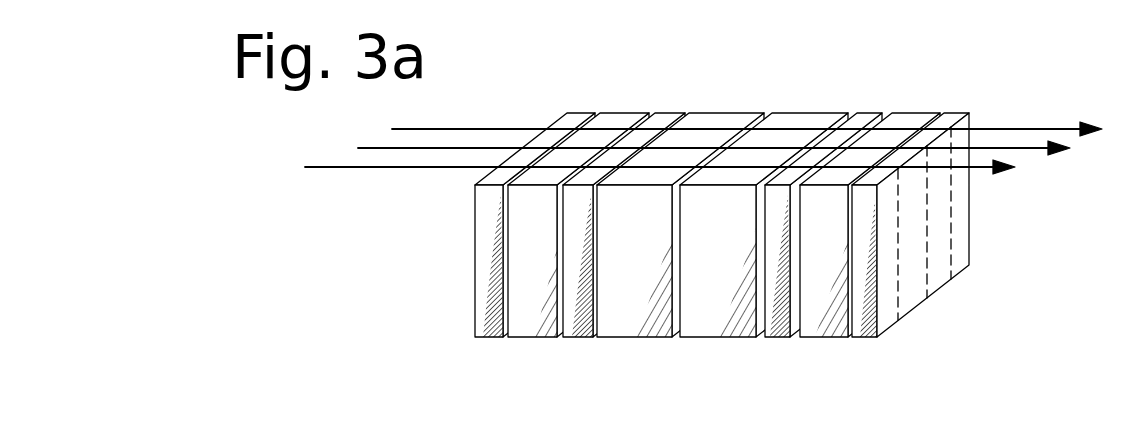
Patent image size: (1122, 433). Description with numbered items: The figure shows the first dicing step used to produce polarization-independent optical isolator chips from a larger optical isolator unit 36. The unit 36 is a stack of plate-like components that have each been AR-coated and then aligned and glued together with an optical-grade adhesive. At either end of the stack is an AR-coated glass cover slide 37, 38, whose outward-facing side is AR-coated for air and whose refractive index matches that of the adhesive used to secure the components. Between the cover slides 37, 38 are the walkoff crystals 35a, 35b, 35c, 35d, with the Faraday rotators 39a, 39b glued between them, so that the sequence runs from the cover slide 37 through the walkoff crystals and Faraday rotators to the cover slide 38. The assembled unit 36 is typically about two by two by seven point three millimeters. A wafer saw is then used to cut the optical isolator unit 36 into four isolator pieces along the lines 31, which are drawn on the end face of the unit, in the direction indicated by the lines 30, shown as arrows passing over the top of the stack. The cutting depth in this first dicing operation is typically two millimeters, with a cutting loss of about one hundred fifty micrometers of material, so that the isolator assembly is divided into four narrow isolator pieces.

The lines 30 is at (387, 110).
The lines 31 is at (905, 322).
The walkoff crystal 35a is at (518, 338).
The walkoff crystal 35b is at (637, 338).
The walkoff crystal 35c is at (723, 337).
The walkoff crystal 35d is at (817, 337).
The optical isolator unit 36 is at (651, 272).
The AR-coated glass cover slide 37 is at (485, 338).
The AR-coated glass cover slide 38 is at (867, 337).
The Faraday rotator 39a is at (575, 338).
The Faraday rotator 39b is at (777, 337).